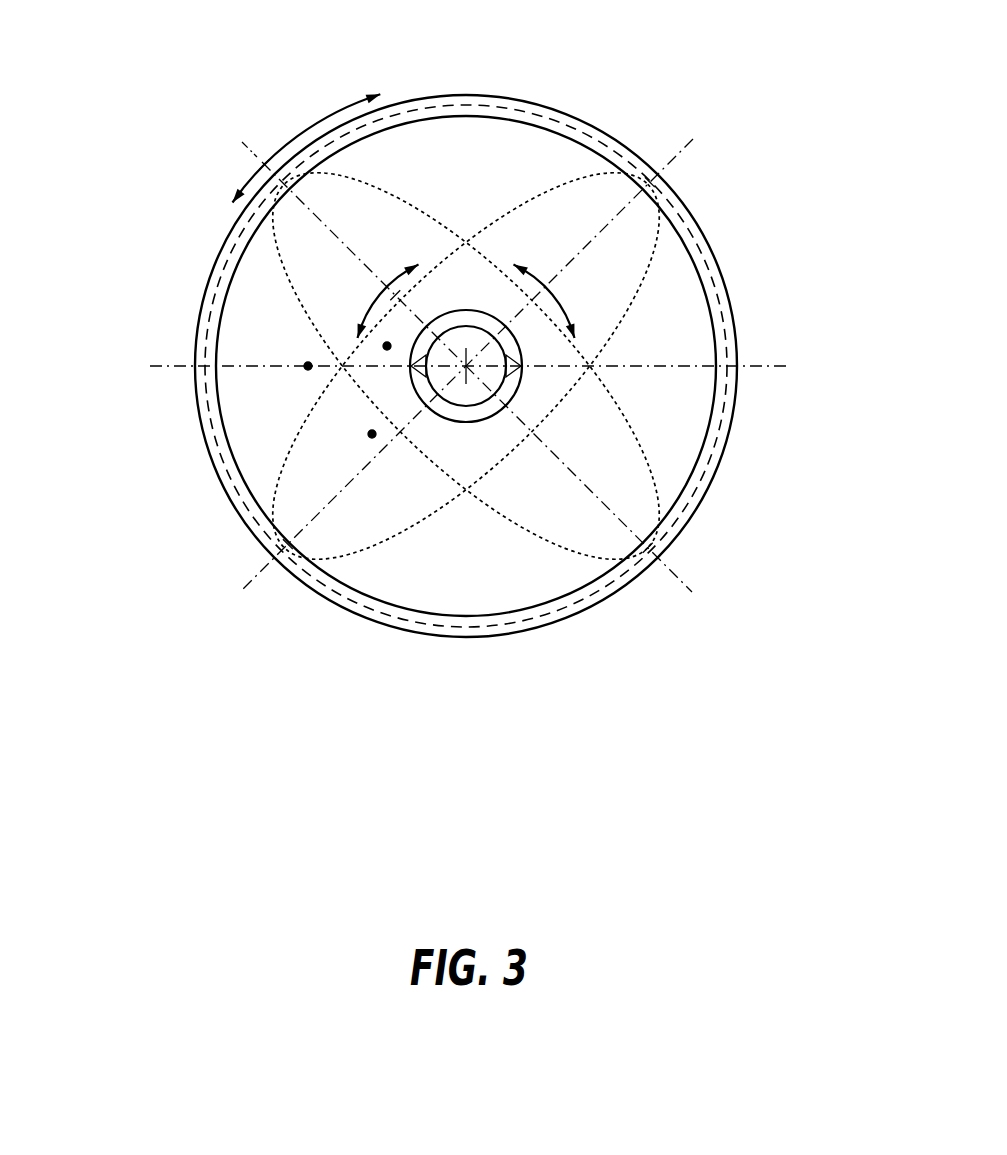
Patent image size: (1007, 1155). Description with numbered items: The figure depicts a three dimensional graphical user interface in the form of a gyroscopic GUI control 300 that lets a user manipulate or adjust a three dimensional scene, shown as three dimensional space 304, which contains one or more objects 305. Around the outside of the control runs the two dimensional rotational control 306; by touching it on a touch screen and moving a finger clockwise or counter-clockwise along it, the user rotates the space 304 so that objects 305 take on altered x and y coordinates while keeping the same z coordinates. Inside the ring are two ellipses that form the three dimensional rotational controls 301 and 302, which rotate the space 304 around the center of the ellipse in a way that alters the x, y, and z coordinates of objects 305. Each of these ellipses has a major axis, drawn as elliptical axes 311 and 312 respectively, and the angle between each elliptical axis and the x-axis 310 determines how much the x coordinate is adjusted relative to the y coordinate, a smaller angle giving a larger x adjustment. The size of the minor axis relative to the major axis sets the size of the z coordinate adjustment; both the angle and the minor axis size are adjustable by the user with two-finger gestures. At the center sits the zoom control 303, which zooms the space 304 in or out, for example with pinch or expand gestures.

The gyroscopic GUI control 300 is at (461, 464).
The 3D rotational control 301 is at (543, 350).
The 3D rotational control 302 is at (534, 389).
The zoom control 303 is at (343, 492).
The 3D space 304 is at (392, 366).
The objects 305 is at (387, 346).
The 2D rotational control 306 is at (436, 105).
The x-axis 310 is at (499, 340).
The elliptical axis 311 is at (542, 364).
The elliptical axis 312 is at (553, 377).